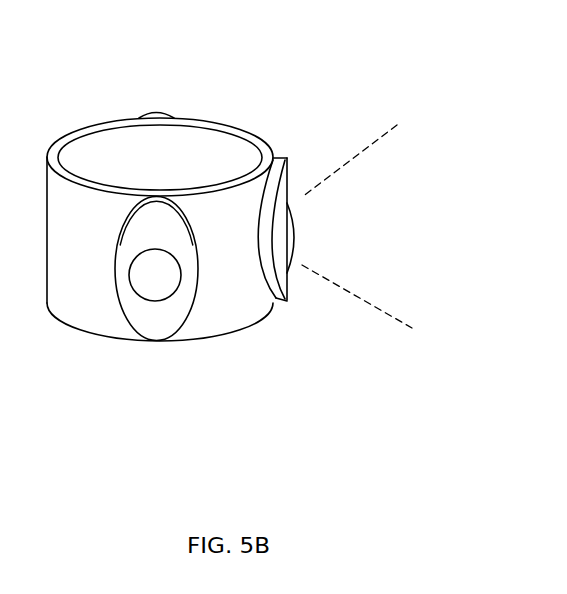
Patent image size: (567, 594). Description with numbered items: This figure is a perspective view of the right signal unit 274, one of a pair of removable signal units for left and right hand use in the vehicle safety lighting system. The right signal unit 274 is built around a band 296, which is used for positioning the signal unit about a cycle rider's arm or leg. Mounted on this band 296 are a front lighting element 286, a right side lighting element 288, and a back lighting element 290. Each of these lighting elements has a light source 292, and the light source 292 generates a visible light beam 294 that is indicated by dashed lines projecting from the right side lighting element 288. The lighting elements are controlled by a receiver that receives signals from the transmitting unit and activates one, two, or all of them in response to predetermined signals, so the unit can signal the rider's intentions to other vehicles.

The right signal unit 274 is at (90, 116).
The front lighting element 286 is at (158, 110).
The right side lighting element 288 is at (281, 303).
The back lighting element 290 is at (160, 325).
The light source 292 is at (145, 275).
The visible light beam 294 is at (362, 148).
The band 296 is at (235, 302).